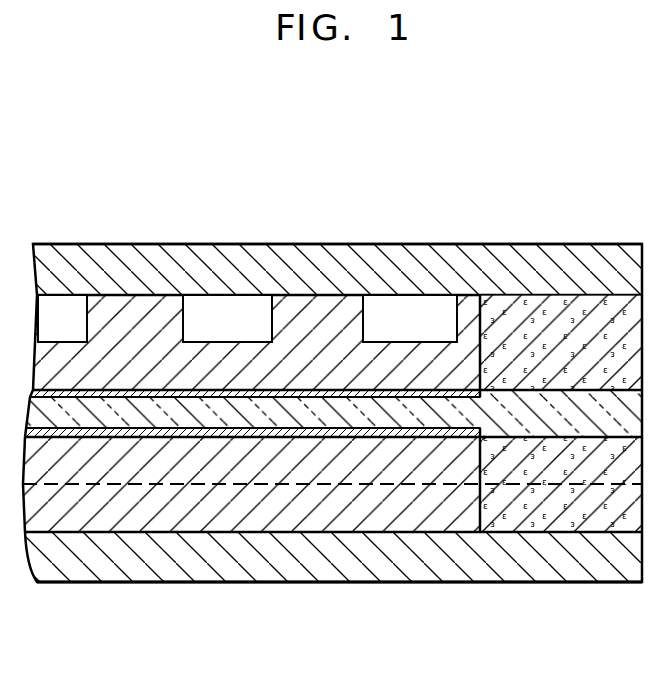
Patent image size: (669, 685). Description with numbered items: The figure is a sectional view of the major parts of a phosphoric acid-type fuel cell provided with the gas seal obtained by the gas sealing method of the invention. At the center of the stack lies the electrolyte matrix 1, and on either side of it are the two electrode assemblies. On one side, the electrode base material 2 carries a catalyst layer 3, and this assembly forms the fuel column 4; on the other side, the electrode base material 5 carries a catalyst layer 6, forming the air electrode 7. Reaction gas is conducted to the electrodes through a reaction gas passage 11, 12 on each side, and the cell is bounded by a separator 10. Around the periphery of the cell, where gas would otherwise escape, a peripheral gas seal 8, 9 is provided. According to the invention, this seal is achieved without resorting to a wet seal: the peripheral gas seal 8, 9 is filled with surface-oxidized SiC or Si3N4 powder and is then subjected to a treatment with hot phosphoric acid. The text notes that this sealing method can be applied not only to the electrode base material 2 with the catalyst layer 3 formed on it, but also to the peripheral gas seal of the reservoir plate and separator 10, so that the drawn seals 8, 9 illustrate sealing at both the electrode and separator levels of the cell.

The electrolyte matrix 1 is at (168, 410).
The electrode base material 2 is at (377, 478).
The catalyst layer 3 is at (413, 433).
The fuel column 4 is at (321, 548).
The electrode base material 5 is at (321, 273).
The catalyst layer 6 is at (120, 393).
The air electrode 7 is at (321, 277).
The peripheral gas seal 8 is at (567, 295).
The peripheral gas seal 9 is at (540, 522).
The separator 10 is at (390, 248).
The reaction gas passage 11 is at (258, 302).
The reaction gas passage 12 is at (250, 520).